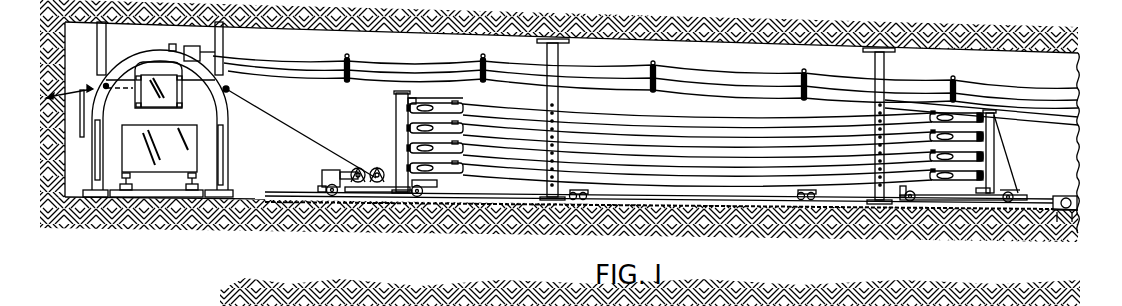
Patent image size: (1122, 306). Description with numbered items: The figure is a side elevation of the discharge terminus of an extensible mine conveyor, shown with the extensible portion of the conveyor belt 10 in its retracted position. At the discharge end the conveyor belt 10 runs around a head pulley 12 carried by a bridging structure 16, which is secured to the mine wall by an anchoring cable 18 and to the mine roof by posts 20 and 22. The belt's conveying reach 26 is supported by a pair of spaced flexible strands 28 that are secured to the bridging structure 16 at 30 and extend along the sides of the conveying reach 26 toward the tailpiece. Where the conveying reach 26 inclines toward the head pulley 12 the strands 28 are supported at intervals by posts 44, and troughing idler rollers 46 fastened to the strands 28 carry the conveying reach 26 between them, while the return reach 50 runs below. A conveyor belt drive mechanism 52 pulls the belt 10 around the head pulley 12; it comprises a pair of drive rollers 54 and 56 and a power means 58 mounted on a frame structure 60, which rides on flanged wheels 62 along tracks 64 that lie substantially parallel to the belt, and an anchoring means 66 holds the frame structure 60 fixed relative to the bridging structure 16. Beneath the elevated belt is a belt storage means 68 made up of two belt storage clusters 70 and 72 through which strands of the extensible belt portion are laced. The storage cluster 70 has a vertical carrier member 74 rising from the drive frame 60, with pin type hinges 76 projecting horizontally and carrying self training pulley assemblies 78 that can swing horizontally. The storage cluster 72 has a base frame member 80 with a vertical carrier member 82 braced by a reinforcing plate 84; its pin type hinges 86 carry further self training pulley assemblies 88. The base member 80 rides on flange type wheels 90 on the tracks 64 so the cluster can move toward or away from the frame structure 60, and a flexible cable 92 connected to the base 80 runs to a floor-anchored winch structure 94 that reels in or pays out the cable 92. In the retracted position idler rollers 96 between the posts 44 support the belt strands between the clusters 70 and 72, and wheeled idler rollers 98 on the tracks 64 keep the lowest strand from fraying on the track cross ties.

The conveyor belt 10 is at (718, 63).
The head pulley 12 is at (205, 52).
The bridging structure 16 is at (138, 46).
The anchoring cable 18 is at (80, 92).
The post 20 is at (97, 36).
The post 22 is at (223, 40).
The conveying reach 26 is at (760, 92).
The flexible strands 28 is at (609, 63).
The strand securing point 30 is at (182, 44).
The posts 44 is at (558, 72).
The troughing idler rollers 46 is at (347, 58).
The return reach 50 is at (1046, 120).
The conveyor belt drive mechanism 52 is at (337, 145).
The drive roller 54 is at (378, 169).
The drive roller 56 is at (355, 170).
The power means 58 is at (323, 173).
The frame structure 60 is at (372, 192).
The flanged wheels 62 is at (331, 196).
The tracks 64 is at (266, 192).
The anchoring means 66 is at (318, 188).
The belt storage means 68 is at (395, 103).
The belt storage cluster 70 is at (432, 98).
The belt storage cluster 72 is at (1011, 157).
The vertical carrier member 74 is at (397, 116).
The pin type hinges 76 is at (412, 108).
The self training pulley assemblies 78 is at (465, 108).
The base frame member 80 is at (950, 200).
The vertical carrier member 82 is at (994, 138).
The reinforcing plate 84 is at (1010, 175).
The pin type hinges 86 is at (988, 112).
The self training pulley assemblies 88 is at (965, 113).
The flange type wheels 90 is at (908, 201).
The flexible cable 92 is at (1050, 195).
The winch structure 94 is at (1078, 200).
The idler rollers 96 is at (551, 117).
The idler rollers 98 is at (583, 200).